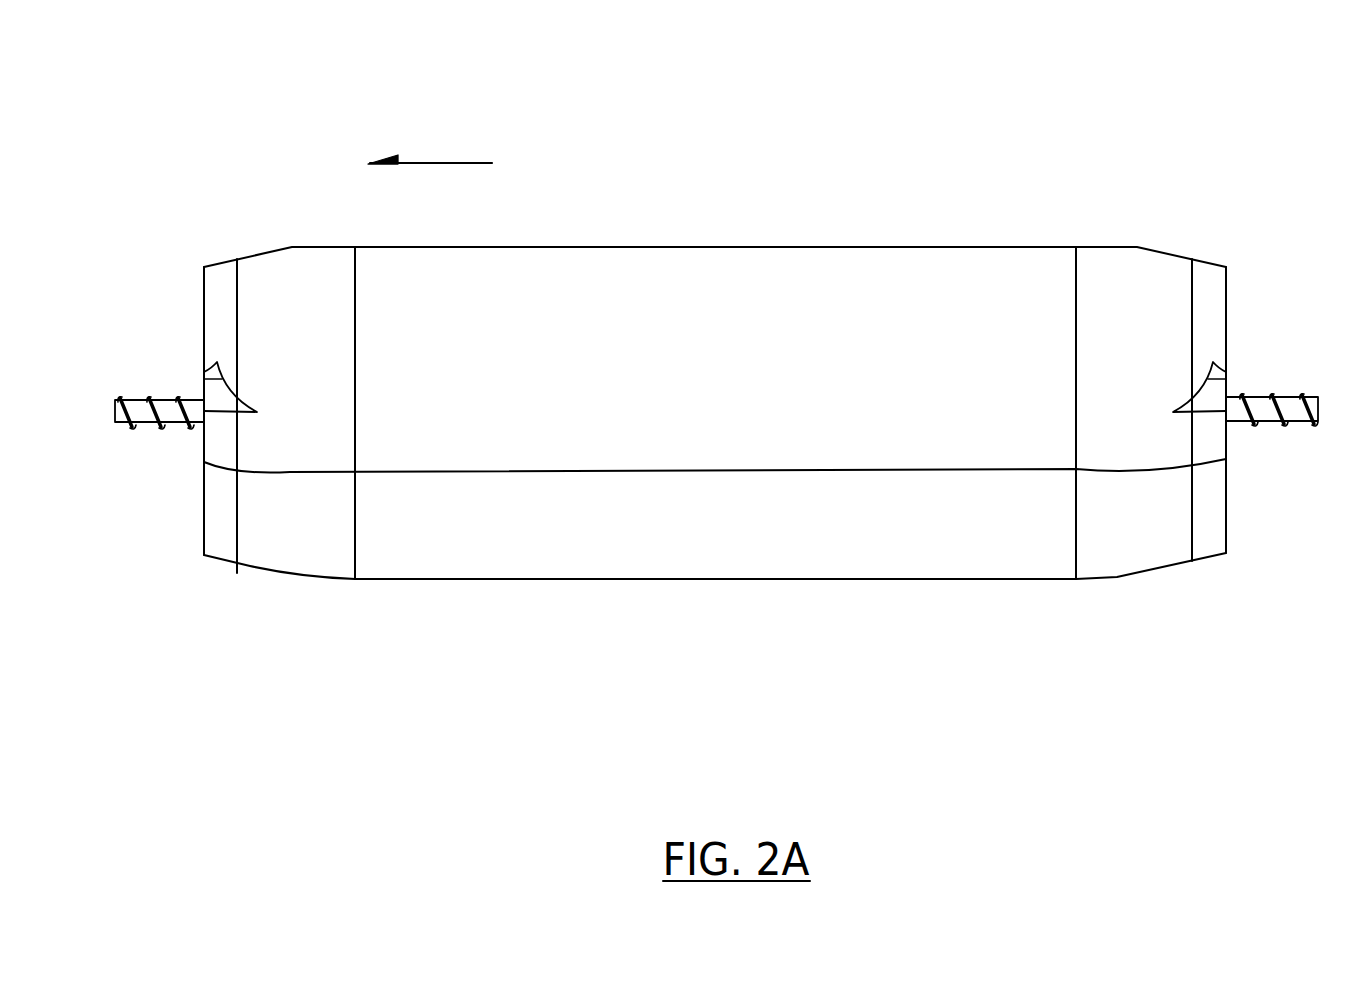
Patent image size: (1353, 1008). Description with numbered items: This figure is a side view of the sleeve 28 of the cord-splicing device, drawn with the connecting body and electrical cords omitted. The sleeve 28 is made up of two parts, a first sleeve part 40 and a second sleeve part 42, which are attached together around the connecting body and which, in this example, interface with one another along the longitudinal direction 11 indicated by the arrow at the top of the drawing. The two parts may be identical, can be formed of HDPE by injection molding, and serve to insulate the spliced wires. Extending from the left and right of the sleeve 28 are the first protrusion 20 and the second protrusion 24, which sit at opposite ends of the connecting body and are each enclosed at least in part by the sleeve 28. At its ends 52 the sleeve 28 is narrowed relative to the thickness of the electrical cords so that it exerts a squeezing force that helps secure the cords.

The longitudinal direction 11 is at (433, 157).
The sleeve 28 is at (795, 137).
The first sleeve part 40 is at (930, 275).
The second sleeve part 42 is at (973, 540).
The ends of the sleeve 52 is at (218, 567).
The first protrusion 20 is at (165, 407).
The second protrusion 24 is at (1265, 408).